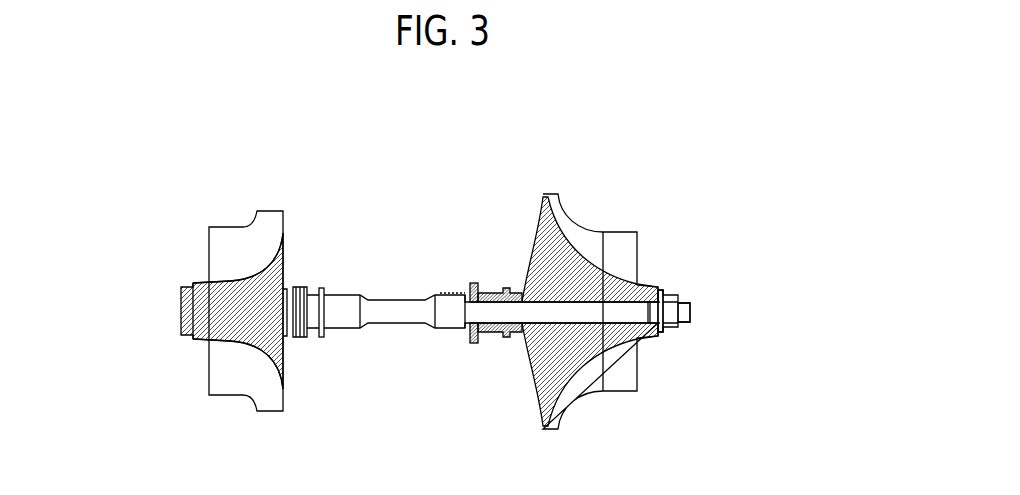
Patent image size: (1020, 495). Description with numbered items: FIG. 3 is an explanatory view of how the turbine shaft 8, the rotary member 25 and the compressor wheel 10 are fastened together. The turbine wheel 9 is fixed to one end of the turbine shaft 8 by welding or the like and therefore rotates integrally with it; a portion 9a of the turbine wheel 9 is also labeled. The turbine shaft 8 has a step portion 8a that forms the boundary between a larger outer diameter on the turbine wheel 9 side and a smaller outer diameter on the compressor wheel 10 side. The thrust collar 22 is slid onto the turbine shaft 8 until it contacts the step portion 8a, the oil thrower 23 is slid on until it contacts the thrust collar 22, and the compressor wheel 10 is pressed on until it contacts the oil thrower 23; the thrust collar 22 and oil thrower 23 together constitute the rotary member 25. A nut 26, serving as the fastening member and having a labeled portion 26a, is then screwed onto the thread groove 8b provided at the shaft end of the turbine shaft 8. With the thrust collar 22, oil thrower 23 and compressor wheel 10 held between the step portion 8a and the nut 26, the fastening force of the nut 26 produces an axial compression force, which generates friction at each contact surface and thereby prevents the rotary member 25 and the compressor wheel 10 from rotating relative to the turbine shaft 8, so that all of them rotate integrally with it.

The turbine shaft 8 is at (388, 297).
The step portion 8a is at (472, 343).
The thread groove 8b is at (679, 329).
The turbine wheel 9 is at (222, 227).
The nose of compressor wheel 9a is at (181, 311).
The compressor wheel 10 is at (621, 232).
The thrust collar 22 is at (472, 282).
The oil thrower 23 is at (510, 289).
The rotary member 25 is at (533, 138).
The nut 26 is at (680, 293).
The flange of nut 26a is at (668, 289).